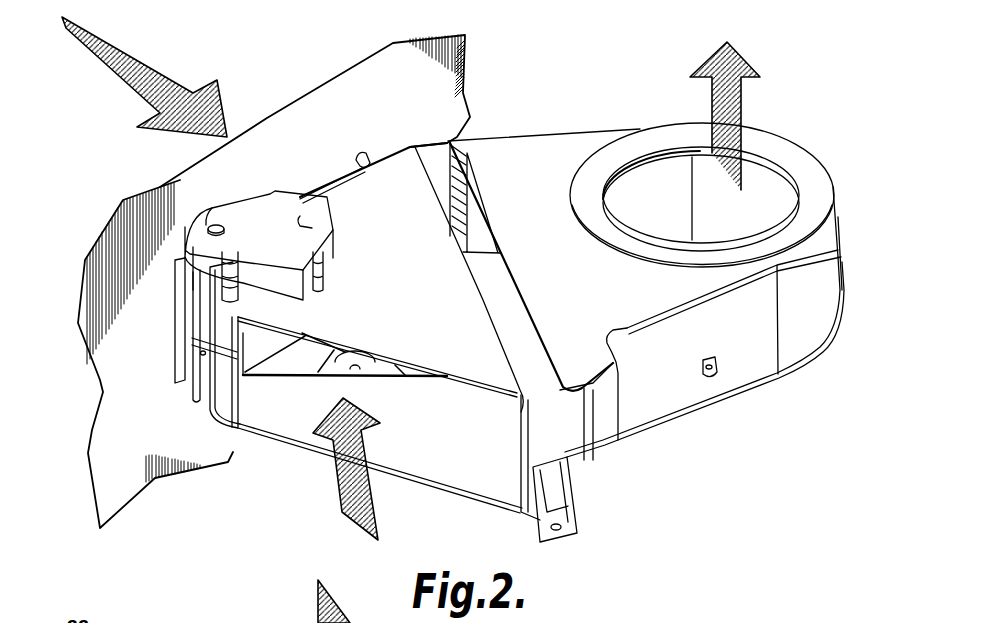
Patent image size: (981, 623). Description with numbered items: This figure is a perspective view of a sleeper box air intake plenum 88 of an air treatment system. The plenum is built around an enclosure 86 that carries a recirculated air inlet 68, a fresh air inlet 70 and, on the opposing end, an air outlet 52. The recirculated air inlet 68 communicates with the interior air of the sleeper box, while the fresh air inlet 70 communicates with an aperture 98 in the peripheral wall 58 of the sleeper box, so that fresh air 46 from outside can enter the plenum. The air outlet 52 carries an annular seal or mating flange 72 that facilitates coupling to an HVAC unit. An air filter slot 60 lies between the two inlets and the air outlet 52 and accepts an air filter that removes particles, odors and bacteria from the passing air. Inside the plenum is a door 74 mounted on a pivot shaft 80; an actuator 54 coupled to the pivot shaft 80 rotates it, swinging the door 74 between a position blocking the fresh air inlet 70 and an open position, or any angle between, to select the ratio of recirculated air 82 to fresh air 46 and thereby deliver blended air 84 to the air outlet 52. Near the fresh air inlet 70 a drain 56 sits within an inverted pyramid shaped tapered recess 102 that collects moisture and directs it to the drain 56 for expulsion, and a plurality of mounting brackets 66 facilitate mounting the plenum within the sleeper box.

The fresh air 46 is at (104, 34).
The air outlet 52 is at (670, 170).
The actuator 54 is at (218, 185).
The drain 56 is at (378, 380).
The peripheral wall 58 is at (330, 97).
The air filter slot 60 is at (470, 200).
The mounting brackets 66 is at (580, 517).
The recirculated air inlet 68 is at (287, 447).
The fresh air inlet 70 is at (356, 158).
The annular seal or mating flange 72 is at (775, 147).
The door 74 is at (250, 378).
The pivot shaft 80 is at (213, 222).
The recirculated air 82 is at (375, 505).
The blended air 84 is at (712, 100).
The enclosure 86 is at (760, 372).
The air intake plenum 88 is at (646, 286).
The aperture 98 is at (182, 296).
The tapered recess 102 is at (262, 378).